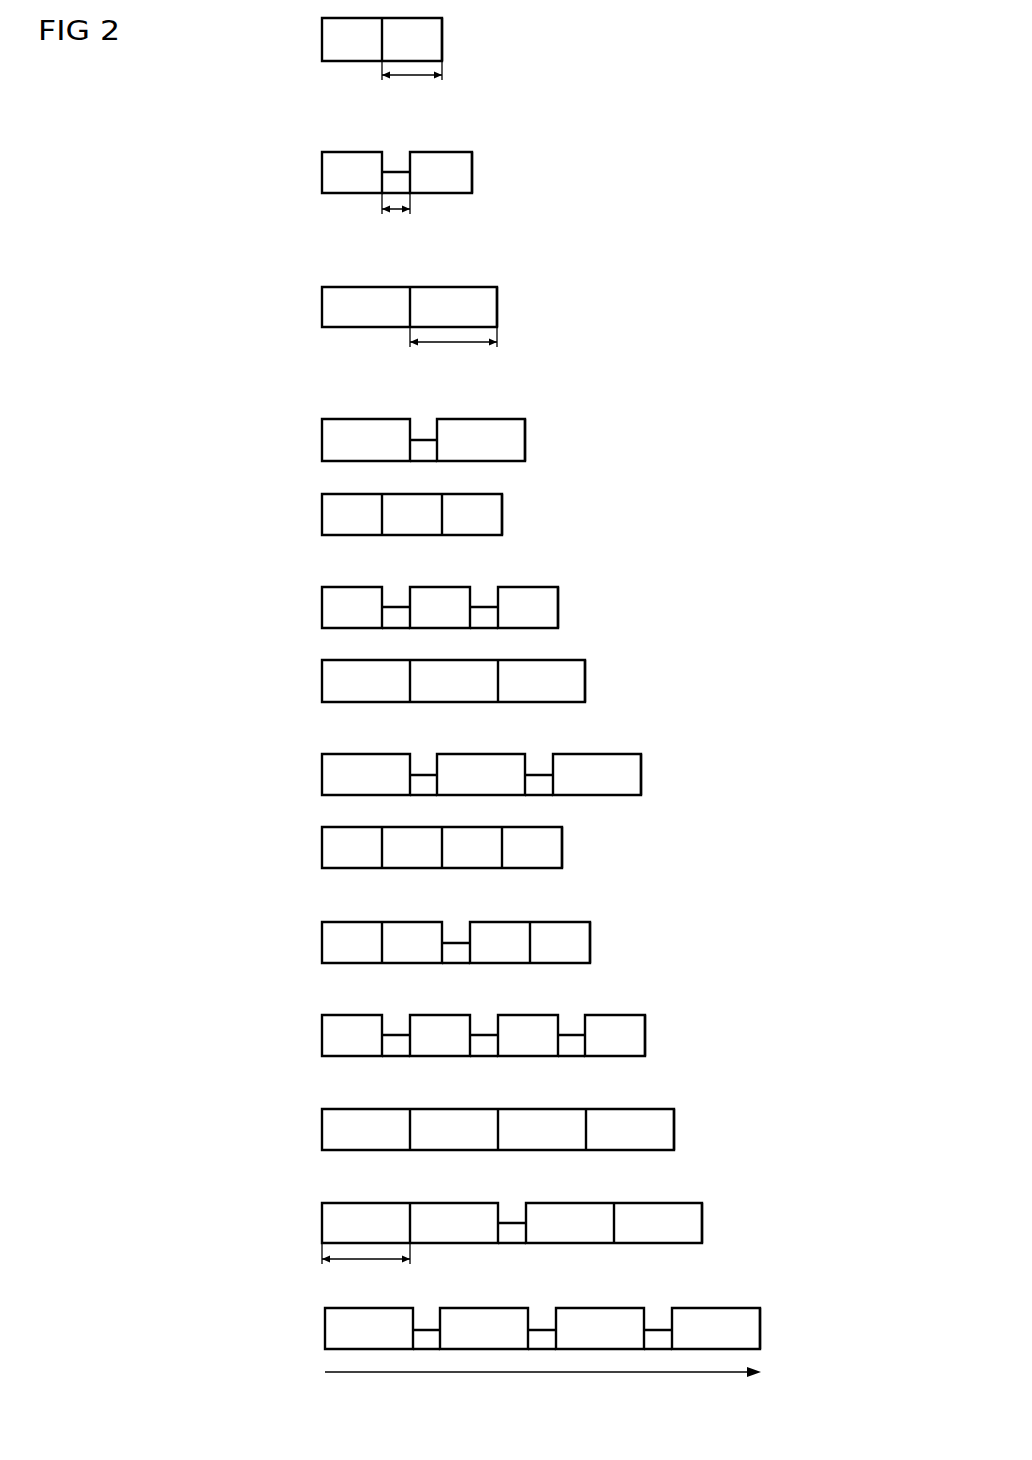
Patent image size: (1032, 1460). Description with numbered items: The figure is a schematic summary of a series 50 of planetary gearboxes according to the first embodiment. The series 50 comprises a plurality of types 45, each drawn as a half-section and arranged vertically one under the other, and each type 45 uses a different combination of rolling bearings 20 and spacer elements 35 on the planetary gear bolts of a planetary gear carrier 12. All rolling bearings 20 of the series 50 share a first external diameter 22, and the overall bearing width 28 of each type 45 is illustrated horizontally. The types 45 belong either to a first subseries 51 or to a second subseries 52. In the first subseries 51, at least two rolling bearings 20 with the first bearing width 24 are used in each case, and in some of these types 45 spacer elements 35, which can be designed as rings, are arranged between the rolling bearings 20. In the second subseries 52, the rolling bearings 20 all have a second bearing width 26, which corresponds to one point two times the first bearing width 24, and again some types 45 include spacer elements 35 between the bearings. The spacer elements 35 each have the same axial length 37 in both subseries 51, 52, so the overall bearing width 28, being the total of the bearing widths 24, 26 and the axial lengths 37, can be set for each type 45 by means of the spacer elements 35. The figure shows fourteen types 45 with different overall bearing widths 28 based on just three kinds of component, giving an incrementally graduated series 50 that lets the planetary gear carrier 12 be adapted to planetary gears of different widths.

The rolling bearing 20 is at (332, 39).
The first bearing width 24 is at (412, 112).
The second bearing width 26 is at (358, 1262).
The first subseries 51 is at (688, 1030).
The second subseries 52 is at (803, 1322).
The type 45 is at (442, 52).
The spacer element 35 is at (396, 178).
The axial length 37 is at (396, 214).
The overall bearing width 28 is at (345, 1372).
The series 50 is at (784, 146).
The planetary gear carrier 12 is at (542, 698).
The first external diameter 22 is at (542, 698).